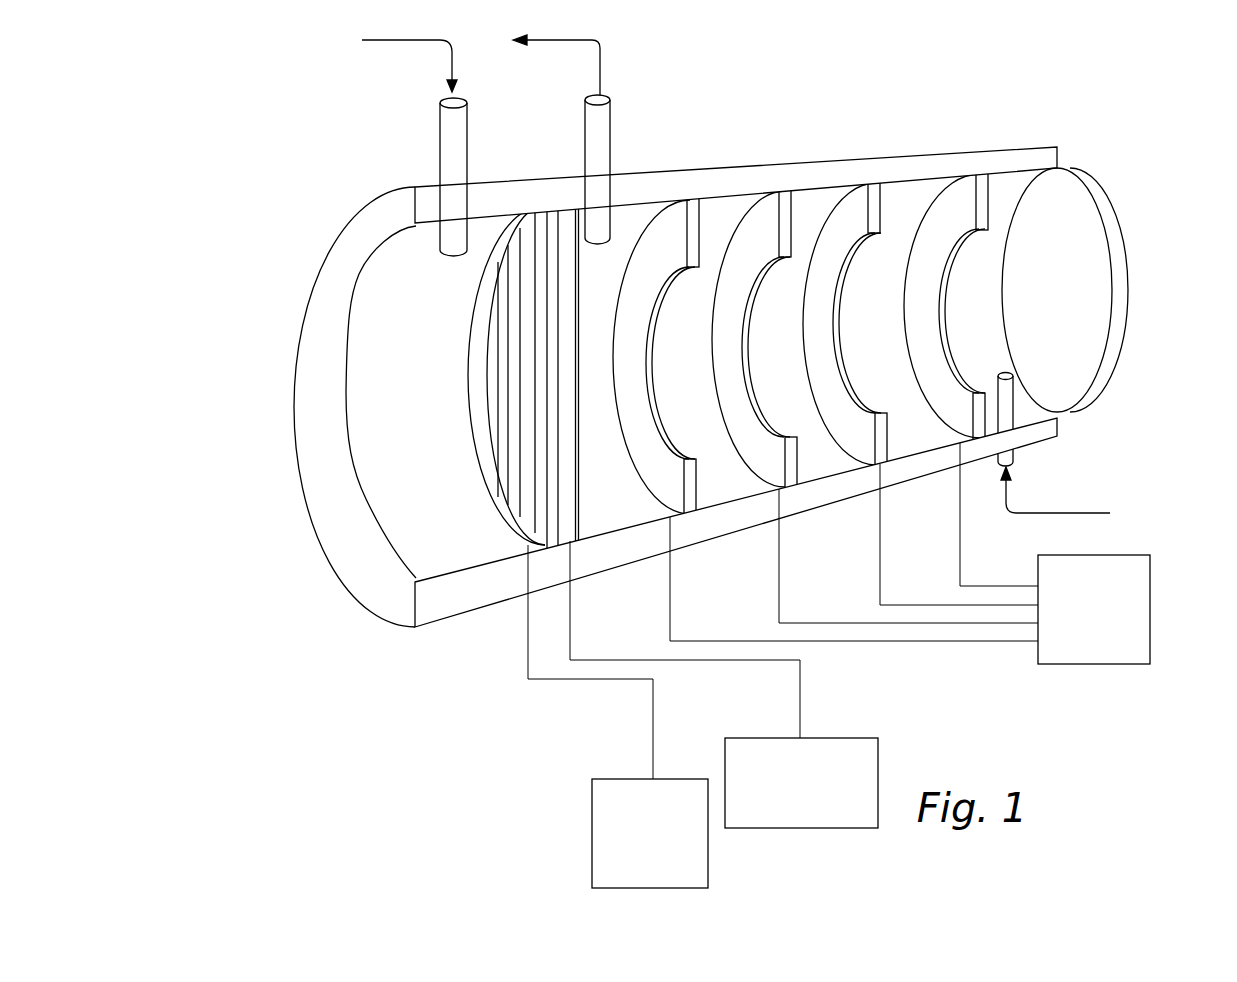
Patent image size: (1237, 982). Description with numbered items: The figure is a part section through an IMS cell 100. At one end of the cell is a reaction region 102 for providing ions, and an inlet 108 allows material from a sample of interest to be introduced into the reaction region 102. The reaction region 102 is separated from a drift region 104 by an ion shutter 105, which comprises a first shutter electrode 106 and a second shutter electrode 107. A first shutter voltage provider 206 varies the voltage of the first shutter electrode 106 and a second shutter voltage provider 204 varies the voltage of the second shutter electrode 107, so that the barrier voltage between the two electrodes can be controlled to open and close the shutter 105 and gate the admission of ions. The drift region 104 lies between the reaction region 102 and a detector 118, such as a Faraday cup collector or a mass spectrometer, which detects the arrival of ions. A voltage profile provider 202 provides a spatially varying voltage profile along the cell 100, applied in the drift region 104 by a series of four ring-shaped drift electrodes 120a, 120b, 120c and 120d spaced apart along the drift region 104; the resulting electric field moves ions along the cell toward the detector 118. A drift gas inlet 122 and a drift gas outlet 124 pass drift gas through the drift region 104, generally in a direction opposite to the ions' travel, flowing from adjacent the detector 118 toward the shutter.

The IMS cell 100 is at (700, 331).
The reaction region 102 is at (373, 431).
The drift region 104 is at (748, 470).
The ion shutter 105 is at (557, 363).
The first shutter electrode 106 is at (528, 230).
The second shutter electrode 107 is at (562, 207).
The inlet 108 is at (447, 131).
The detector 118 is at (1093, 187).
The first drift electrode 120a is at (683, 217).
The second drift electrode 120b is at (764, 213).
The third drift electrode 120c is at (864, 205).
The fourth drift electrode 120d is at (970, 205).
The drift gas inlet 122 is at (1015, 450).
The drift gas outlet 124 is at (604, 120).
The voltage profile provider 202 is at (910, 553).
The second shutter voltage provider 204 is at (724, 684).
The first shutter voltage provider 206 is at (618, 716).